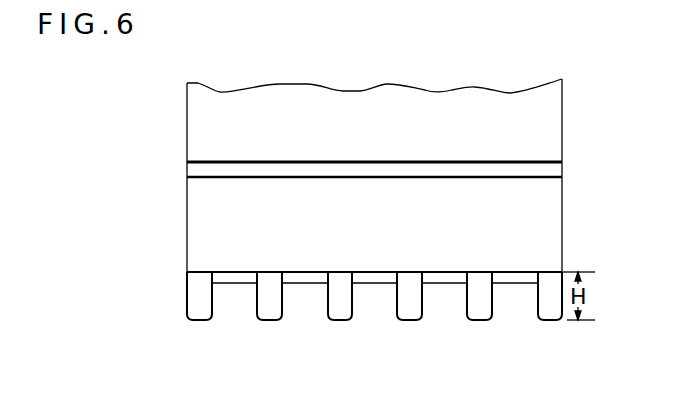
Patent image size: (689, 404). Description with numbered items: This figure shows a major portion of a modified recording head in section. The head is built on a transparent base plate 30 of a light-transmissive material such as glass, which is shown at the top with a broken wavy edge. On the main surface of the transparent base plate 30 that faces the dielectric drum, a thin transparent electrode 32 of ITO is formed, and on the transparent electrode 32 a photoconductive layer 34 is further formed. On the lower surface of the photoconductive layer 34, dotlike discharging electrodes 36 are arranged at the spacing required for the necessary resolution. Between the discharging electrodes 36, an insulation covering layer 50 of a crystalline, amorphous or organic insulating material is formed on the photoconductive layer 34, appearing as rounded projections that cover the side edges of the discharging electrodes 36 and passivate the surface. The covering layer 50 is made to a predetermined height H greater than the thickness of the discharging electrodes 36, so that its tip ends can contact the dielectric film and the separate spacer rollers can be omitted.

The transparent base plate 30 is at (195, 138).
The transparent electrode 32 is at (195, 172).
The photoconductive layer 34 is at (200, 223).
The discharging electrodes 36 is at (240, 279).
The insulation covering layer 50 is at (193, 309).